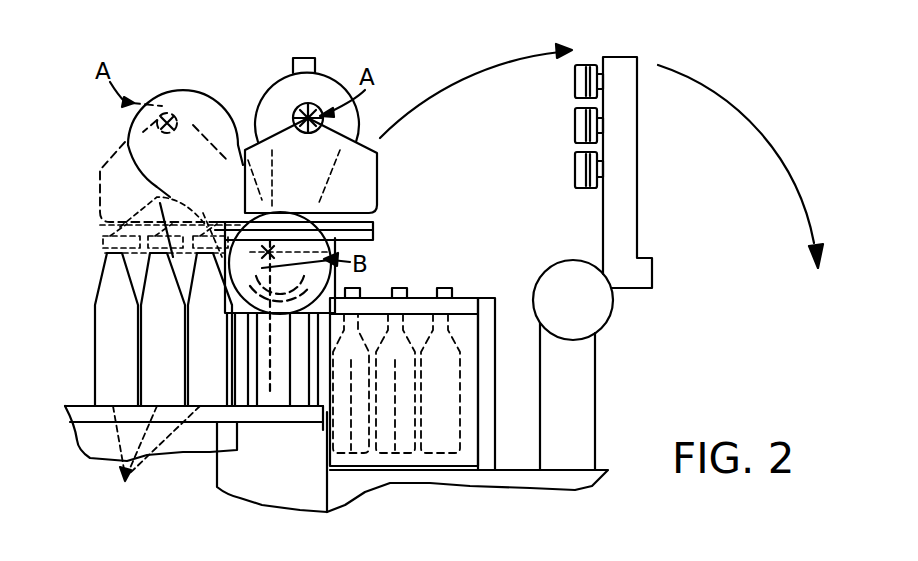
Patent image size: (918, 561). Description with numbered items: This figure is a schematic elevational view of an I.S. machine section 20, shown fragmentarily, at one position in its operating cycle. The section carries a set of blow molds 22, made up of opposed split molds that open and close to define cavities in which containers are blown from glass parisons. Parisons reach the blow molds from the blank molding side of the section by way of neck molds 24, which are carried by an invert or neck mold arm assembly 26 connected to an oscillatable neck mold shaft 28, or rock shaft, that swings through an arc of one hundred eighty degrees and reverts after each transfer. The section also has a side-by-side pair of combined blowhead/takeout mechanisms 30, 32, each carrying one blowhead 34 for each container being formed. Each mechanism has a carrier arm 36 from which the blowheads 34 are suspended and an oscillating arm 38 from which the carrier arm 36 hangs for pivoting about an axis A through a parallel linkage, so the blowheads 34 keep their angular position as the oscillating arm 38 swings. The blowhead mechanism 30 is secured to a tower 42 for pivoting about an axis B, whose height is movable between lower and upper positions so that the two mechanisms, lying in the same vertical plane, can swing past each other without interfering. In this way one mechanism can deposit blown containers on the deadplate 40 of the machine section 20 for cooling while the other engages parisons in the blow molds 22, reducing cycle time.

The I.S. machine section 20 is at (580, 480).
The blow molds 22 is at (487, 290).
The neck molds 24 is at (575, 172).
The invert or neck mold arm assembly 26 is at (633, 128).
The invert or neck mold shaft 28 is at (597, 312).
The combined blowhead/takeout mechanism 30 is at (380, 180).
The combined blowhead/takeout mechanism 32 is at (97, 172).
The blowheads 34 is at (330, 262).
The carrier arm 36 is at (370, 146).
The oscillating arm 38 is at (218, 108).
The deadplate 40 is at (187, 457).
The tower 42 is at (247, 395).